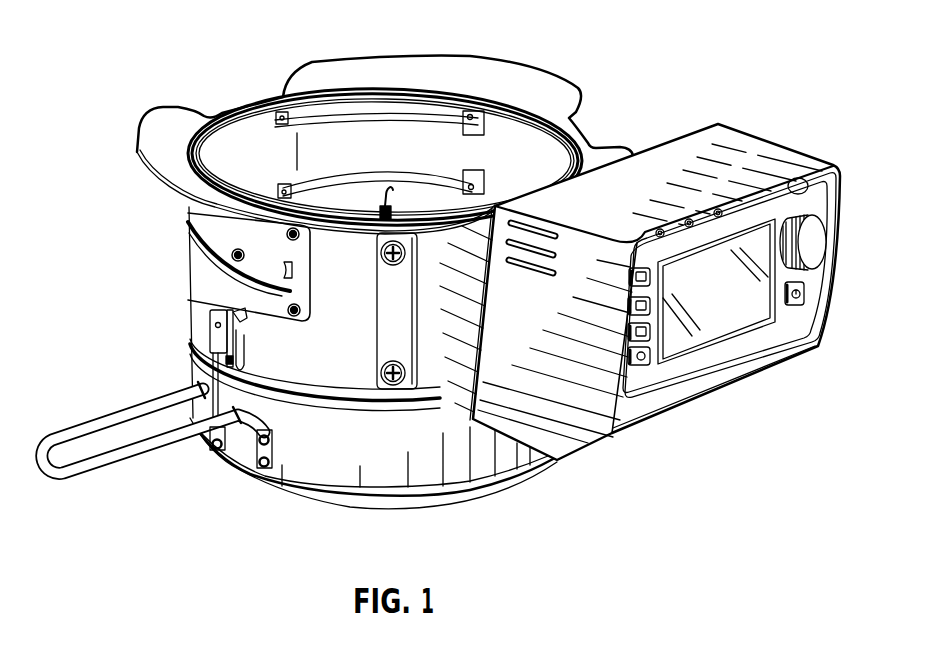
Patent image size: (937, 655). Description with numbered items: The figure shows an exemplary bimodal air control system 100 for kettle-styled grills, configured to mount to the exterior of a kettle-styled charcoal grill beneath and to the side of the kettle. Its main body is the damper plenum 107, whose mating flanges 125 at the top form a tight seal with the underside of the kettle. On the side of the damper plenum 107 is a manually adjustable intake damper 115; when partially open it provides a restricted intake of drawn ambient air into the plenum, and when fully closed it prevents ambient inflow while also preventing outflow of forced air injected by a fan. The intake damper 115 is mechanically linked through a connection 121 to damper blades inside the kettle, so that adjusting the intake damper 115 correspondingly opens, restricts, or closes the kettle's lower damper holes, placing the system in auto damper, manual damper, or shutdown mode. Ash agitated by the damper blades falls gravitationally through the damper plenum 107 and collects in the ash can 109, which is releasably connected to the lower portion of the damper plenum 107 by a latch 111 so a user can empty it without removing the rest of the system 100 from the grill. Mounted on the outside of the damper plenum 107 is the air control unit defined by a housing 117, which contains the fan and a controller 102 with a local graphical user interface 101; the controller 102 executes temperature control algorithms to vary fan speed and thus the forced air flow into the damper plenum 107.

The bimodal air control system 100 is at (119, 43).
The graphical user interface 101 is at (705, 325).
The controller 102 is at (787, 320).
The damper plenum 107 is at (360, 357).
The ash can 109 is at (453, 467).
The latch 111 is at (222, 334).
The intake damper 115 is at (202, 238).
The housing 117 is at (748, 148).
The connection 121 is at (391, 198).
The mating flanges 125 is at (342, 72).